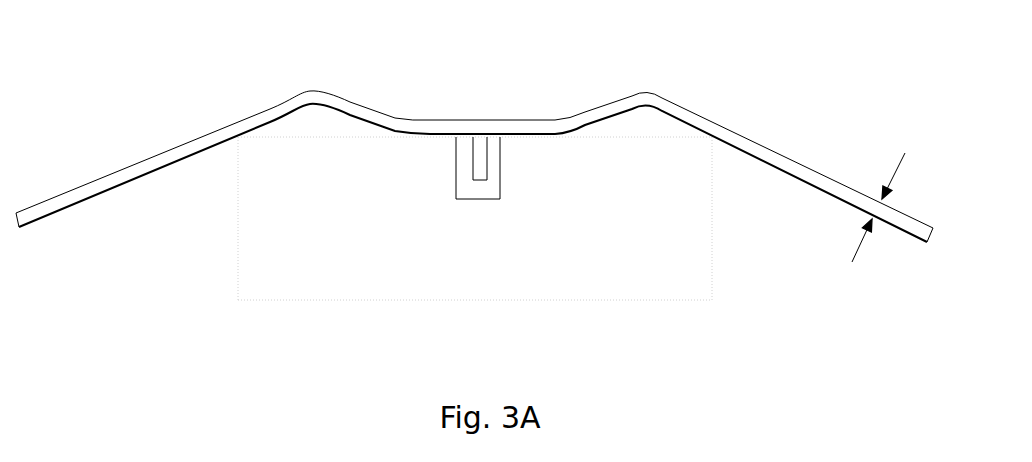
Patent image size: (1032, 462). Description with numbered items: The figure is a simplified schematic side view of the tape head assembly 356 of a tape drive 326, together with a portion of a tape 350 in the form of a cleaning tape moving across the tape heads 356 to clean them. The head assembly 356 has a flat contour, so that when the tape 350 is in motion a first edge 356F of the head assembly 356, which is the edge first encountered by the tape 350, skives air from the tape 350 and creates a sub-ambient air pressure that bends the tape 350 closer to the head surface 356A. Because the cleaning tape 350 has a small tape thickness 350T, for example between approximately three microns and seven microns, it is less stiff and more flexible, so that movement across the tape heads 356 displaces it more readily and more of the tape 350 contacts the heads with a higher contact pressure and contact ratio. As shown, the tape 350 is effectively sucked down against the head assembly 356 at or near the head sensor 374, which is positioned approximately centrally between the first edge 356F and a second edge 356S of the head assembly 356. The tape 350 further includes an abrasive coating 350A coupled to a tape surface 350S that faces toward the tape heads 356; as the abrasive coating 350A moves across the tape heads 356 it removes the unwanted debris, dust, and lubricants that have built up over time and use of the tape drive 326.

The tape drive 326 is at (474, 188).
The tape 350 is at (474, 148).
The tape surface 350S is at (63, 207).
The abrasive coating 350A is at (118, 187).
The tape thickness 350T is at (893, 172).
The tape head assembly 356 is at (496, 188).
The head surface 356A is at (343, 136).
The first edge 356F is at (238, 137).
The second edge 356S is at (712, 138).
The head sensor 374 is at (480, 178).